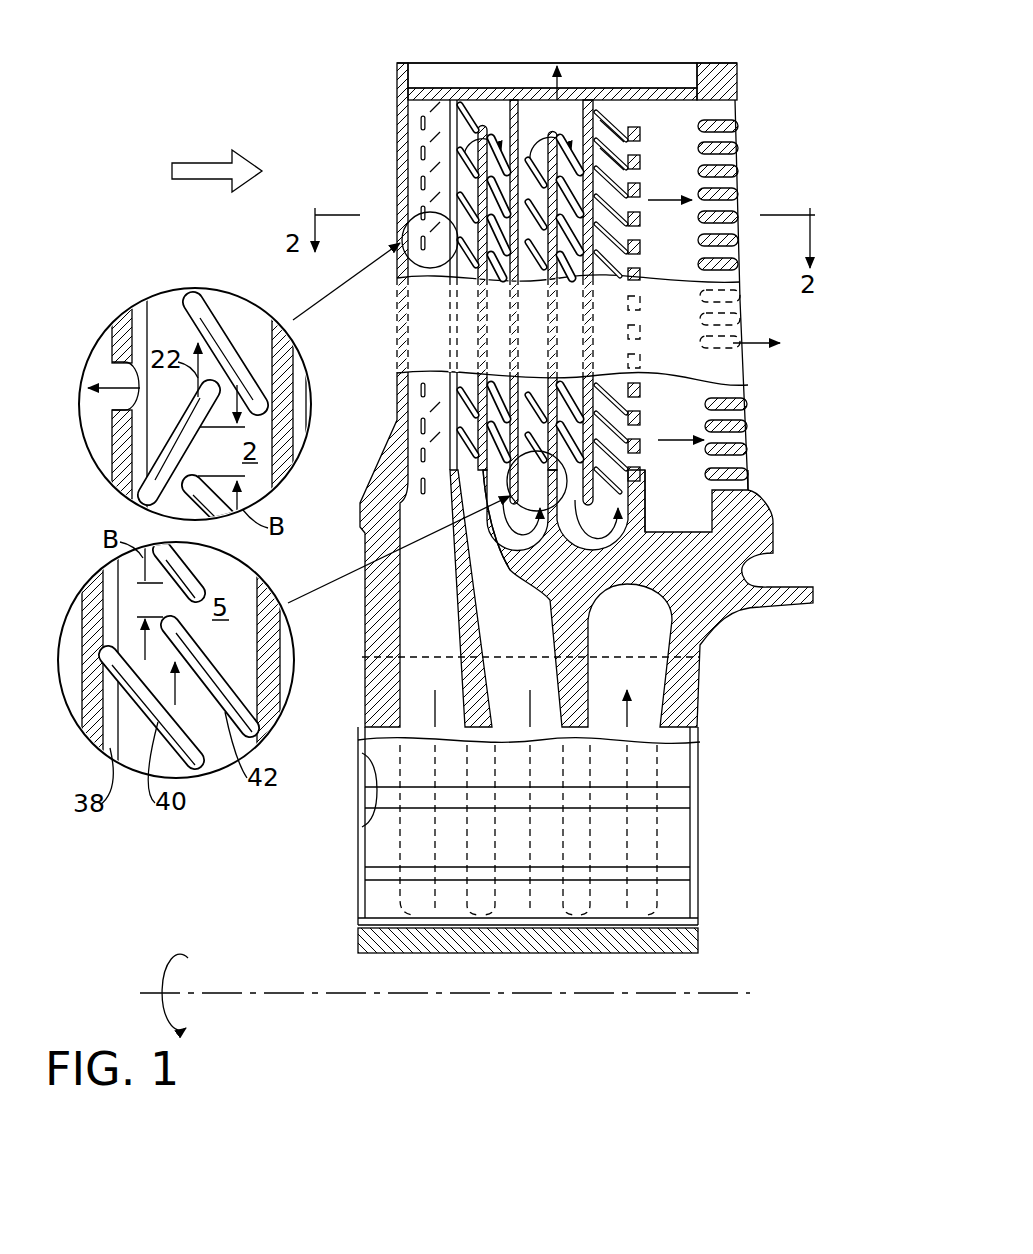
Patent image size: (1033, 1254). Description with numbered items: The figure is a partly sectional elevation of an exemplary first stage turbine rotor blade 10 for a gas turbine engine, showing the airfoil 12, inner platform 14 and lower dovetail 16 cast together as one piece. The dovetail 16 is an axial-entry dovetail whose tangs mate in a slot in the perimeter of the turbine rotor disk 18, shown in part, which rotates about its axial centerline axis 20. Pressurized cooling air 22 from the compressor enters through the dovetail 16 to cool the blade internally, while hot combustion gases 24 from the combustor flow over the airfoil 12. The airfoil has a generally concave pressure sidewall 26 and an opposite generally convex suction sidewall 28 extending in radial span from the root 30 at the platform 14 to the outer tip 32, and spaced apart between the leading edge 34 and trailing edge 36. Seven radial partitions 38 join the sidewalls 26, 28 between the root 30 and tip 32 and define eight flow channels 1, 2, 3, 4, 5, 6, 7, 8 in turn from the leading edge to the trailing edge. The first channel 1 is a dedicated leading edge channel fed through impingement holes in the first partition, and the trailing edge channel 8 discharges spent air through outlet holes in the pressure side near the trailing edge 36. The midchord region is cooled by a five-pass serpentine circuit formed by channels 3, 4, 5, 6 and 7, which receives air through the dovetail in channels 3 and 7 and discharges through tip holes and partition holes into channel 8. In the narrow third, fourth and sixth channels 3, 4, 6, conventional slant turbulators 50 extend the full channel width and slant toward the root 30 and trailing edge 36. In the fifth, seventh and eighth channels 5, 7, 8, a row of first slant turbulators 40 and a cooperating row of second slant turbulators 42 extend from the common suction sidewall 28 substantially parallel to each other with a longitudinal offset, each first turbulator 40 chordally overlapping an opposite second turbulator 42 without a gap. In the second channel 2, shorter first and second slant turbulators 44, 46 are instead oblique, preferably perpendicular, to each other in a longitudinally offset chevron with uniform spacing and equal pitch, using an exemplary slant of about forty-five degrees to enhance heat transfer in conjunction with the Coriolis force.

The first channel 1 is at (417, 102).
The second channel 2 is at (462, 100).
The third channel 3 is at (495, 122).
The fourth channel 4 is at (535, 130).
The fifth channel 5 is at (568, 125).
The sixth channel 6 is at (605, 112).
The seventh channel 7 is at (634, 118).
The trailing edge channel 8 is at (664, 120).
The turbine rotor blade 10 is at (766, 57).
The airfoil 12 is at (395, 99).
The inner platform 14 is at (774, 520).
The dovetail 16 is at (668, 810).
The turbine rotor disk 18 is at (700, 948).
The axial centerline axis 20 is at (283, 990).
The cooling air 22 is at (432, 726).
The hot combustion gases 24 is at (213, 163).
The pressure sidewall 26 is at (690, 344).
The suction sidewall 28 is at (690, 256).
The root 30 is at (752, 494).
The tip 32 is at (616, 70).
The leading edge 34 is at (397, 150).
The trailing edge 36 is at (738, 142).
The radial partitions 38 is at (472, 586).
The first slant turbulators 40 is at (628, 140).
The second slant turbulators 42 is at (627, 170).
The first chevron slant turbulator 44 is at (150, 443).
The second chevron slant turbulator 46 is at (205, 325).
The conventional slant turbulators 50 is at (456, 564).